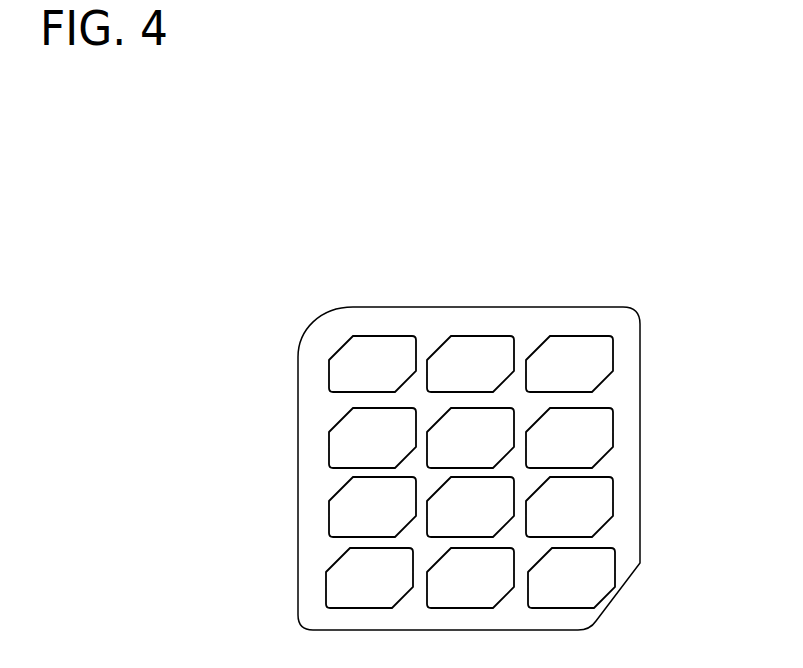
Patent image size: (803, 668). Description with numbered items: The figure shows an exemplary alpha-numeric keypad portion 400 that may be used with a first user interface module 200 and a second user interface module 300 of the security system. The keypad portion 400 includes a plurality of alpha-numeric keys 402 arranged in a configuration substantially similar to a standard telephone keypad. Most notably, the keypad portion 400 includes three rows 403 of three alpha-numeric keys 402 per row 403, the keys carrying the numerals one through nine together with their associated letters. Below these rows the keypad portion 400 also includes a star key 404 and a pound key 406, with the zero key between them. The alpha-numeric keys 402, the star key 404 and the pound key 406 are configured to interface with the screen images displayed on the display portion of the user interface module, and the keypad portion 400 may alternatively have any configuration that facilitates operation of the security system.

The first user interface module 200 is at (265, 195).
The second user interface module 300 is at (632, 275).
The alpha-numeric keypad portion 400 is at (435, 459).
The alpha-numeric keys 402 is at (592, 370).
The rows 403 is at (278, 377).
The star key 404 is at (337, 590).
The pound key 406 is at (598, 583).